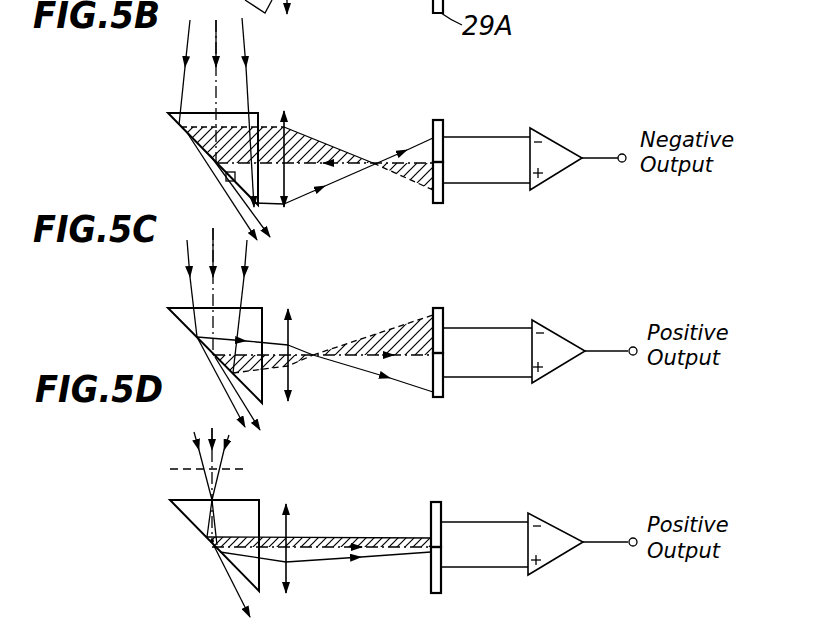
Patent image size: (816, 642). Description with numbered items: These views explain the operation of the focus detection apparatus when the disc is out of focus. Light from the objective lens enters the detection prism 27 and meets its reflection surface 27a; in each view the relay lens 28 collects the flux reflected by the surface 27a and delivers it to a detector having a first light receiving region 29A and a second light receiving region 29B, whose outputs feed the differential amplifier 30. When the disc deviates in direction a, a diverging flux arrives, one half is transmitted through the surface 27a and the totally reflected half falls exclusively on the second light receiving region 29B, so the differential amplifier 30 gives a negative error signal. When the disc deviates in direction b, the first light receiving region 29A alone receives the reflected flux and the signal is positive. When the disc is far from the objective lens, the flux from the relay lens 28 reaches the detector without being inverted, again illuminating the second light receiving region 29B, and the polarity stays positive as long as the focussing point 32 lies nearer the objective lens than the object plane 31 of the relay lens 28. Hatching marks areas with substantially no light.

In FIG. 5B, the detection prism 27 is at (258, 116).
In FIG. 5C, the detection prism 27 is at (252, 310).
In FIG. 5D, the detection prism 27 is at (245, 508).
In FIG. 5B, the reflection surface 27a is at (226, 176).
In FIG. 5B, the relay lens 28 is at (286, 120).
In FIG. 5C, the relay lens 28 is at (290, 320).
In FIG. 5D, the relay lens 28 is at (288, 512).
In FIG. 5B, the first light receiving region 29A is at (442, 204).
In FIG. 5C, the first light receiving region 29A is at (442, 398).
In FIG. 5D, the first light receiving region 29A is at (441, 594).
In FIG. 5B, the second light receiving region 29B is at (444, 120).
In FIG. 5C, the second light receiving region 29B is at (444, 316).
In FIG. 5D, the second light receiving region 29B is at (442, 512).
In FIG. 5B, the differential amplifier 30 is at (563, 161).
In FIG. 5C, the differential amplifier 30 is at (553, 342).
In FIG. 5D, the differential amplifier 30 is at (550, 532).
In FIG. 5D, the object plane 31 is at (173, 468).
In FIG. 5D, the focussing point 32 is at (216, 514).